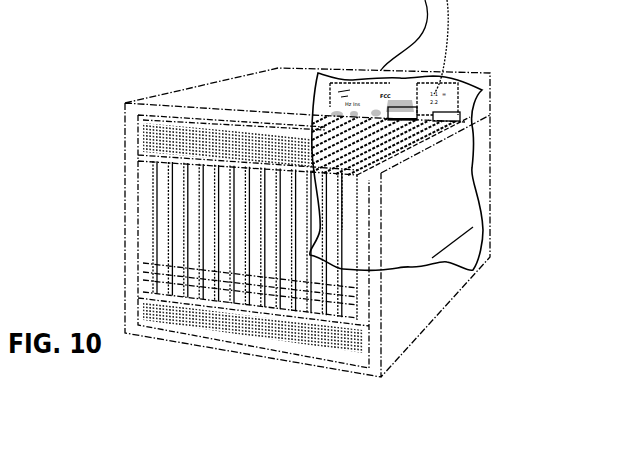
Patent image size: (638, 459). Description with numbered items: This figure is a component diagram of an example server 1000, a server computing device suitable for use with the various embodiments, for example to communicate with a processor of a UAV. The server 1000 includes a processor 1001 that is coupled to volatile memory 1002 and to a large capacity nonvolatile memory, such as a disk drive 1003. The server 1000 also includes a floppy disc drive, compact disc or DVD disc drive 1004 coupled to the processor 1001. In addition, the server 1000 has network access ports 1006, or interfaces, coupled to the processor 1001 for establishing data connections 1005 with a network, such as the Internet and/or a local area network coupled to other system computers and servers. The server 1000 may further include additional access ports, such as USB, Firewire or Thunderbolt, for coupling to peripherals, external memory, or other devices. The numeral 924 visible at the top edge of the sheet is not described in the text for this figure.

The server 1000 is at (180, 92).
The processor 1001 is at (404, 112).
The volatile memory 1002 is at (457, 115).
The disk drive 1003 is at (178, 198).
The disc drive 1004 is at (162, 220).
The data connections 1005 is at (424, 1).
The network access ports 1006 is at (333, 112).
The adjacent component 924 is at (93, 0).